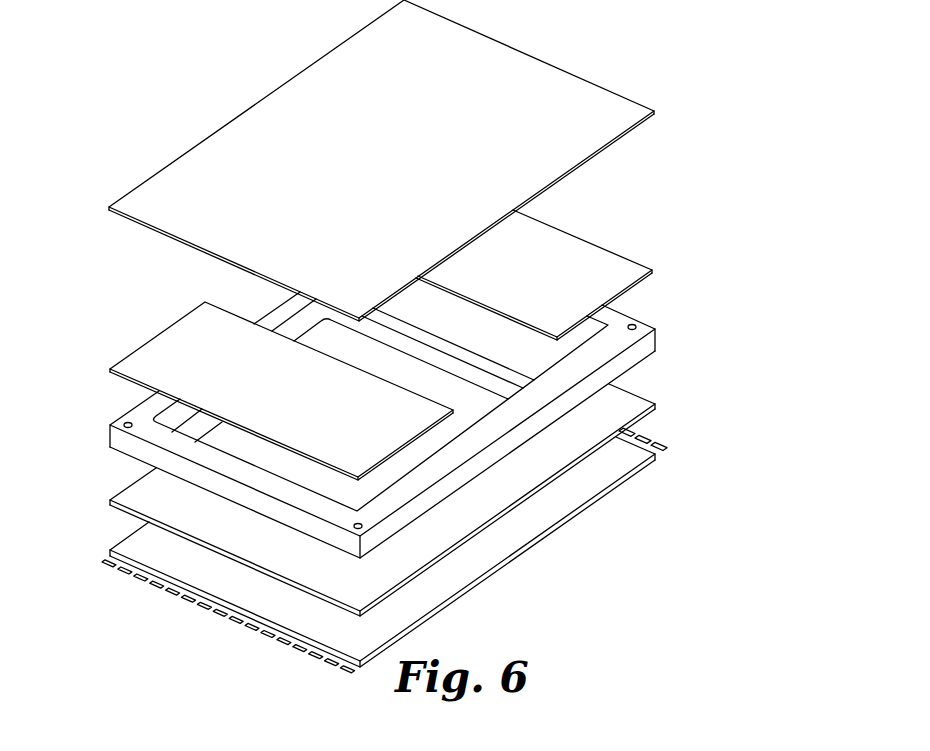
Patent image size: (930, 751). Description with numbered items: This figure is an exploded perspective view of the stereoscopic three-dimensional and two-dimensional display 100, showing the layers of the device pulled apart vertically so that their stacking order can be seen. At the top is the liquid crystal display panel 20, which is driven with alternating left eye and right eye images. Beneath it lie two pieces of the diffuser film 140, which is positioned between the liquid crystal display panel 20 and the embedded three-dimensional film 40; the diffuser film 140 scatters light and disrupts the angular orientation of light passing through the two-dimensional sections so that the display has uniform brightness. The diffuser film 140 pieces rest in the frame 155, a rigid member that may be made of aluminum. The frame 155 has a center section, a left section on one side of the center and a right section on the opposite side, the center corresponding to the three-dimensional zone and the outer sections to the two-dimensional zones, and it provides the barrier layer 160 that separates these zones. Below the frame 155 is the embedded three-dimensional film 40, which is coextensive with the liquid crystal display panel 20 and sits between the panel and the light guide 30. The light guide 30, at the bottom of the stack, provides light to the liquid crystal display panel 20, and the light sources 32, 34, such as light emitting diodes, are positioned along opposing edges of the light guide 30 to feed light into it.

The stereoscopic 3D display and 2D display 100 is at (592, 47).
The liquid crystal display panel 20 is at (196, 158).
The diffuser film 140 is at (584, 254).
The frame 155 is at (118, 440).
The barrier layer 160 is at (493, 380).
The embedded 3D film 40 is at (122, 495).
The light guide 30 is at (565, 498).
The light source 32 is at (661, 443).
The light source 34 is at (150, 585).